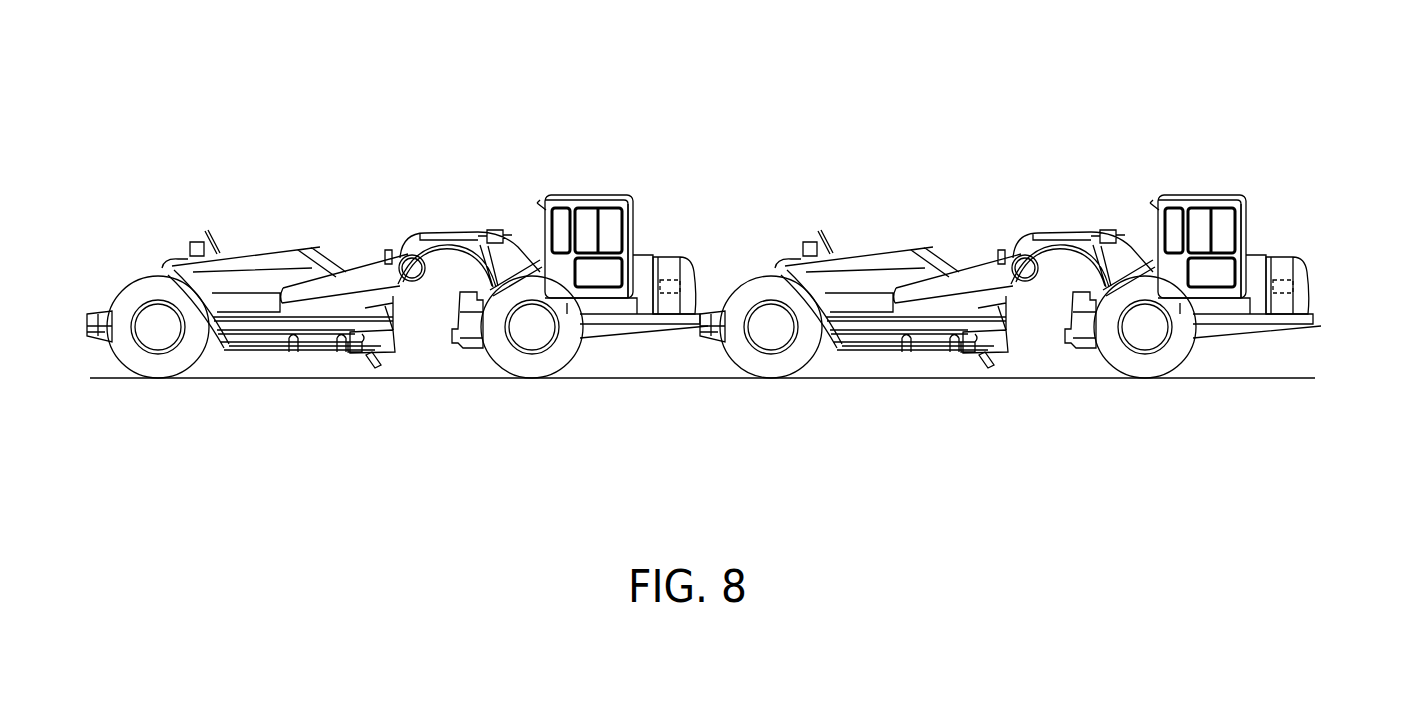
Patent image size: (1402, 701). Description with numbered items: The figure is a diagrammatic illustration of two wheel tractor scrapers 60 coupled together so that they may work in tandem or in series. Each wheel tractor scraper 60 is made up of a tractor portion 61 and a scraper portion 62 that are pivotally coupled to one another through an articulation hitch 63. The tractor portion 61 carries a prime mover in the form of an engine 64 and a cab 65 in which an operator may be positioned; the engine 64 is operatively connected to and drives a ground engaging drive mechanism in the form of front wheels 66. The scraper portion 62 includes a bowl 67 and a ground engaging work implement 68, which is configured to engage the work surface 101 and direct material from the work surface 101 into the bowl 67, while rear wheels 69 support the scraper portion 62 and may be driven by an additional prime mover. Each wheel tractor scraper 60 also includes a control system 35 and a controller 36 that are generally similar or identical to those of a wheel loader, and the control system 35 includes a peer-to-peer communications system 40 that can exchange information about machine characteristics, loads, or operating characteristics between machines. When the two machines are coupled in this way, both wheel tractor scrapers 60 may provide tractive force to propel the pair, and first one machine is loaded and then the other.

The wheel tractor scraper 60 is at (445, 108).
The peer-to-peer communications system 40 is at (560, 153).
The bowl 67 is at (180, 258).
The scraper portion 62 is at (262, 252).
The articulation hitch 63 is at (428, 250).
The cab 65 is at (590, 196).
The control system 35 is at (641, 180).
The engine 64 is at (644, 260).
The tractor portion 61 is at (686, 272).
The controller 36 is at (680, 288).
The rear wheels 69 is at (167, 363).
The ground engaging work implement 68 is at (378, 362).
The front wheels 66 is at (535, 363).
The work surface 101 is at (1253, 378).